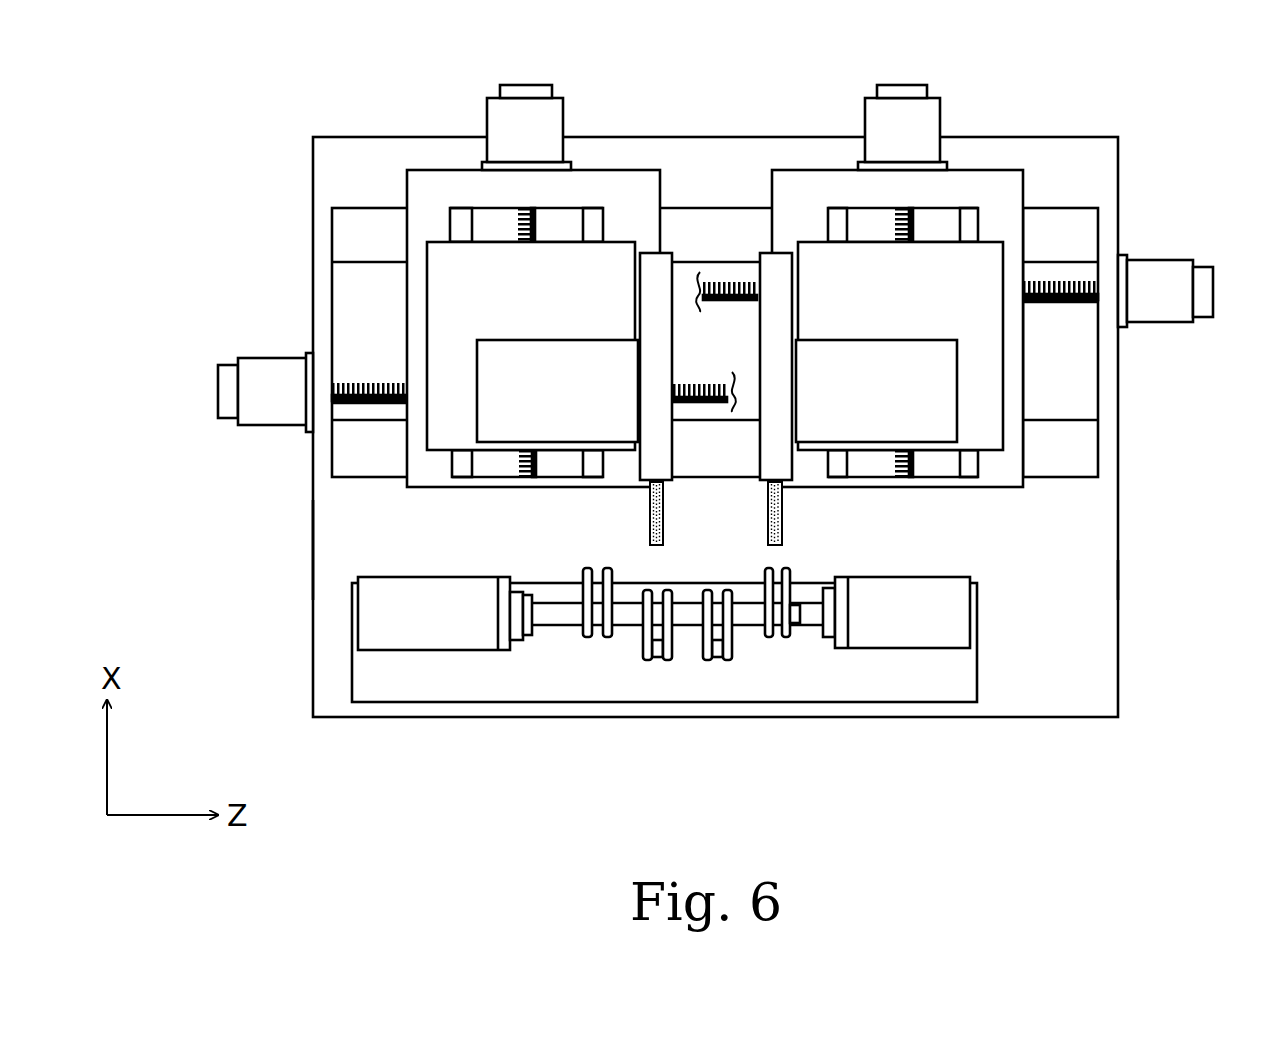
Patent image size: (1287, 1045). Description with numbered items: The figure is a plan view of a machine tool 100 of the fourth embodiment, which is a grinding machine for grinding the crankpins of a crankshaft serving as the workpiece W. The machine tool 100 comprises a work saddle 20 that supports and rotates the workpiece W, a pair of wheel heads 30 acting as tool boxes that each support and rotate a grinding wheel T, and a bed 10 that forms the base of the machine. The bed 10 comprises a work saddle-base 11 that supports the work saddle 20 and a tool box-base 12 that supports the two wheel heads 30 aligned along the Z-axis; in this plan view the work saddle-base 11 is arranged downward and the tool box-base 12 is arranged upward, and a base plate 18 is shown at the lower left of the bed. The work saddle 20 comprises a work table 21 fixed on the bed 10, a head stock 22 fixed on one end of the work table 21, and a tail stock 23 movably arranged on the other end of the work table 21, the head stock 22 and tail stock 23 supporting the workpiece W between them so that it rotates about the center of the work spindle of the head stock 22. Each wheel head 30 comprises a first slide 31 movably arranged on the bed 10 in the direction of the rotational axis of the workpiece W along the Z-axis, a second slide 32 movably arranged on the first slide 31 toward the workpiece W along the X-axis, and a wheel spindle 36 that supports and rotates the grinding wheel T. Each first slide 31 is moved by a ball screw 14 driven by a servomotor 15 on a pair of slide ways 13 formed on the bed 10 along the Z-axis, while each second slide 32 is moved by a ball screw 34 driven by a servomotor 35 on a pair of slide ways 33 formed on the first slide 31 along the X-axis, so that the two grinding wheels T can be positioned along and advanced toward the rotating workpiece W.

The machine tool 100 is at (741, 418).
The bed 10 is at (722, 422).
The work saddle-base 11 is at (1102, 578).
The tool box-base 12 is at (1110, 383).
The slide ways 13 is at (1090, 237).
The ball screw 14 is at (365, 382).
The servomotor 15 is at (262, 388).
The base plate 18 is at (372, 550).
The work saddle 20 is at (664, 682).
The work table 21 is at (783, 679).
The head stock 22 is at (440, 632).
The tail stock 23 is at (902, 637).
The wheel head 30 is at (719, 267).
The first slide 31 is at (431, 179).
The second slide 32 is at (447, 292).
The slide ways 33 is at (462, 223).
The ball screw 34 is at (533, 229).
The servomotor 35 is at (530, 108).
The wheel spindle 36 is at (543, 362).
The grinding wheel T is at (648, 519).
The workpiece W is at (648, 663).